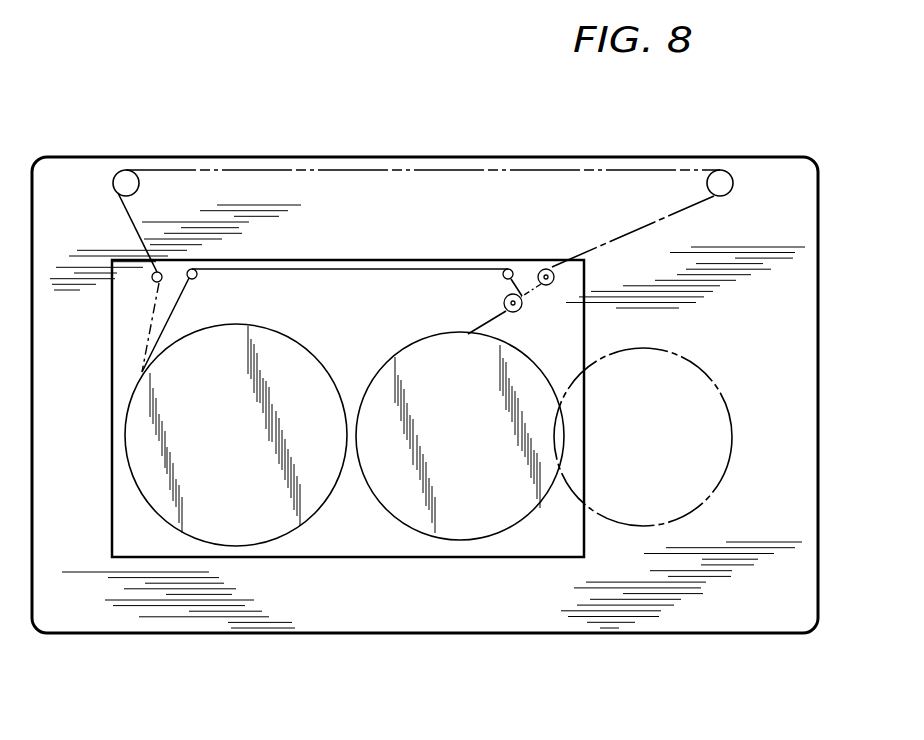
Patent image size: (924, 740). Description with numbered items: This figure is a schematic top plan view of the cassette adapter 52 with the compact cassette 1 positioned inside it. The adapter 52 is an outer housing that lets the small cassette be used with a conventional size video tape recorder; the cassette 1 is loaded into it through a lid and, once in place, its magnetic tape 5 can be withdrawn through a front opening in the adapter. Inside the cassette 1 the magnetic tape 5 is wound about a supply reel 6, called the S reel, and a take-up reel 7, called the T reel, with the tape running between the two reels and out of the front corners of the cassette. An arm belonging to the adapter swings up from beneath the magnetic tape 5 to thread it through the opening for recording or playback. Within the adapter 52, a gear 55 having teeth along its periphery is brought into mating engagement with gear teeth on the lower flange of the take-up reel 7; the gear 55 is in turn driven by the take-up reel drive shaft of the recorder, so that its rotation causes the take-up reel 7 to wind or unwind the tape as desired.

The compact cassette 1 is at (360, 558).
The magnetic tape 5 is at (530, 168).
The supply reel 6 is at (225, 530).
The take-up reel 7 is at (495, 523).
The cassette adapter 52 is at (812, 303).
The gear 55 is at (733, 453).